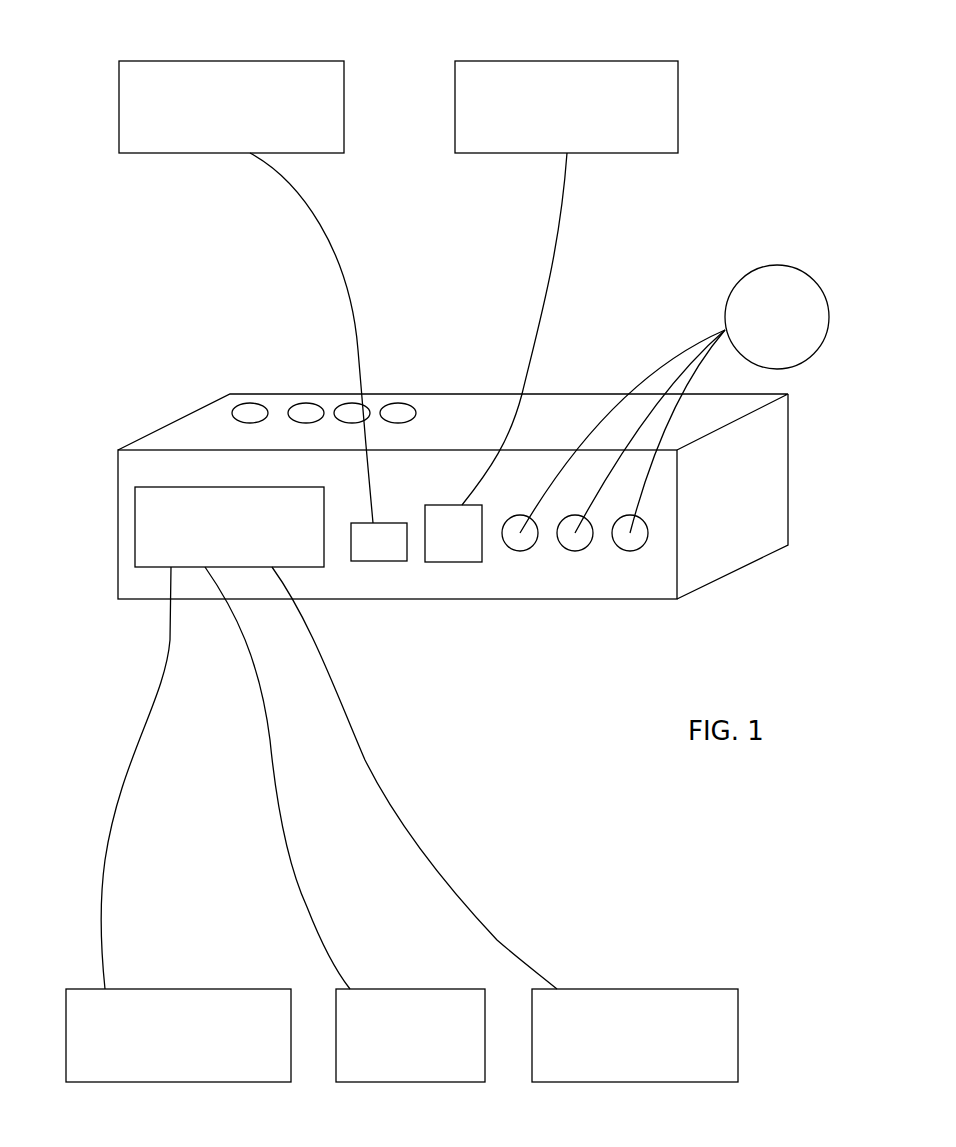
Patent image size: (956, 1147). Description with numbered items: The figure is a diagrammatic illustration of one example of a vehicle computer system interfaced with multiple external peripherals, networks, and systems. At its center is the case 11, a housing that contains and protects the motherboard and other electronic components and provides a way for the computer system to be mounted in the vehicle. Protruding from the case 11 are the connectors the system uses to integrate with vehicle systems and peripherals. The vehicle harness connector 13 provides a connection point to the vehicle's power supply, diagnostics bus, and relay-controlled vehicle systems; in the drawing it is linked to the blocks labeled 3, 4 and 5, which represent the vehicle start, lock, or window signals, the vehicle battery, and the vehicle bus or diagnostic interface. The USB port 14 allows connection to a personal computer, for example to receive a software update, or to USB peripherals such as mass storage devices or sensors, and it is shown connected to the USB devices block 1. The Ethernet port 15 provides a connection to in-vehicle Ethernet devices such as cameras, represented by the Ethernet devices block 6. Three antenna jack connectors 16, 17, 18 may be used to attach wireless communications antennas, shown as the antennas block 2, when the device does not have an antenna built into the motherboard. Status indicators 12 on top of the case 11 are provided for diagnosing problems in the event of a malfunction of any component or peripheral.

The USB devices 1 is at (139, 60).
The antennas 2 is at (825, 287).
The vehicle start, locks, or window signals 3 is at (665, 988).
The vehicle battery 4 is at (395, 988).
The vehicle bus or diagnostic interface 5 is at (203, 988).
The Ethernet devices 6 is at (500, 60).
The case 11 is at (492, 413).
The status indicators 12 is at (285, 400).
The vehicle harness connector 13 is at (135, 513).
The USB port 14 is at (387, 561).
The Ethernet port 15 is at (453, 562).
The antenna jack connector 16 is at (518, 551).
The antenna jack connector 17 is at (575, 551).
The antenna jack connector 18 is at (630, 551).